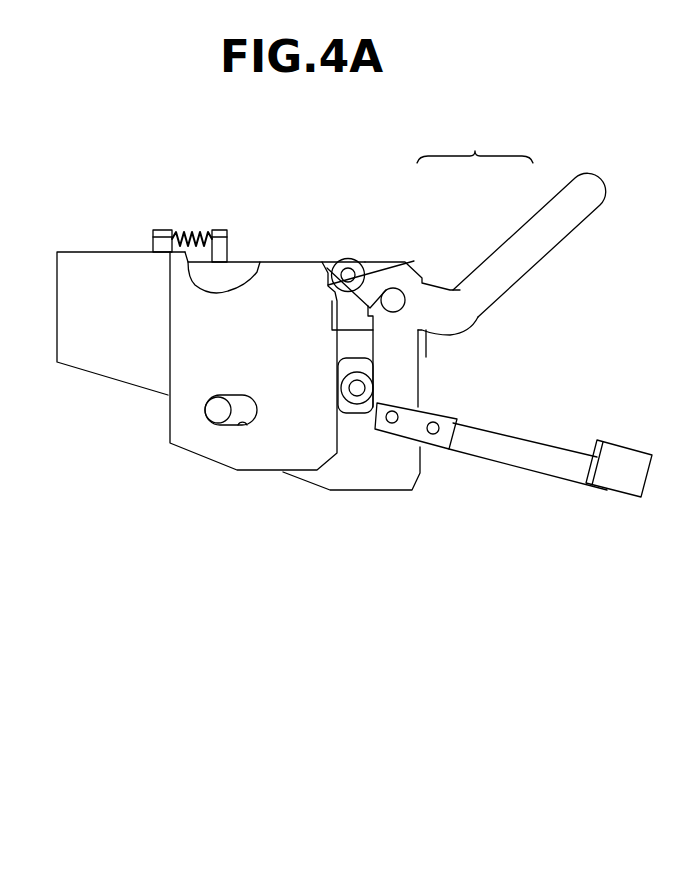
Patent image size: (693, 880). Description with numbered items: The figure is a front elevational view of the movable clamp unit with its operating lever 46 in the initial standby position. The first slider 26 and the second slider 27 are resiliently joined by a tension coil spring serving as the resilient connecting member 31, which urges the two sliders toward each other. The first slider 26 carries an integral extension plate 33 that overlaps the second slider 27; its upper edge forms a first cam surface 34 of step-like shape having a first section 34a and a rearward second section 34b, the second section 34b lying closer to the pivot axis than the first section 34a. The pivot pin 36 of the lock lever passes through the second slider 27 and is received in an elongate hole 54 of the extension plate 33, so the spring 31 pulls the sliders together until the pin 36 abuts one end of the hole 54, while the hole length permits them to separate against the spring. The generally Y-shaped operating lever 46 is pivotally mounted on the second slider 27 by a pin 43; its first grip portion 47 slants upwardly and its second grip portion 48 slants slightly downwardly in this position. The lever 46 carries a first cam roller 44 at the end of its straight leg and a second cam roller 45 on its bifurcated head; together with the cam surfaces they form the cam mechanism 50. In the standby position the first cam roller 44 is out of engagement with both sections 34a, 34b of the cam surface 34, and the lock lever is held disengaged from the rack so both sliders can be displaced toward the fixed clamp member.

The first slider 26 is at (117, 368).
The second slider 27 is at (383, 478).
The resilient connecting member 31 is at (192, 232).
The extension plate 33 is at (283, 282).
The first cam surface 34 is at (475, 141).
The first section 34a is at (370, 262).
The second section 34b is at (413, 262).
The pivot pin 36 is at (216, 423).
The pin 43 is at (400, 302).
The first cam roller 44 is at (350, 260).
The second cam roller 45 is at (373, 388).
The operating lever 46 is at (422, 368).
The first grip portion 47 is at (550, 210).
The second grip portion 48 is at (620, 457).
The cam mechanism 50 is at (303, 349).
The elongate hole 54 is at (250, 423).